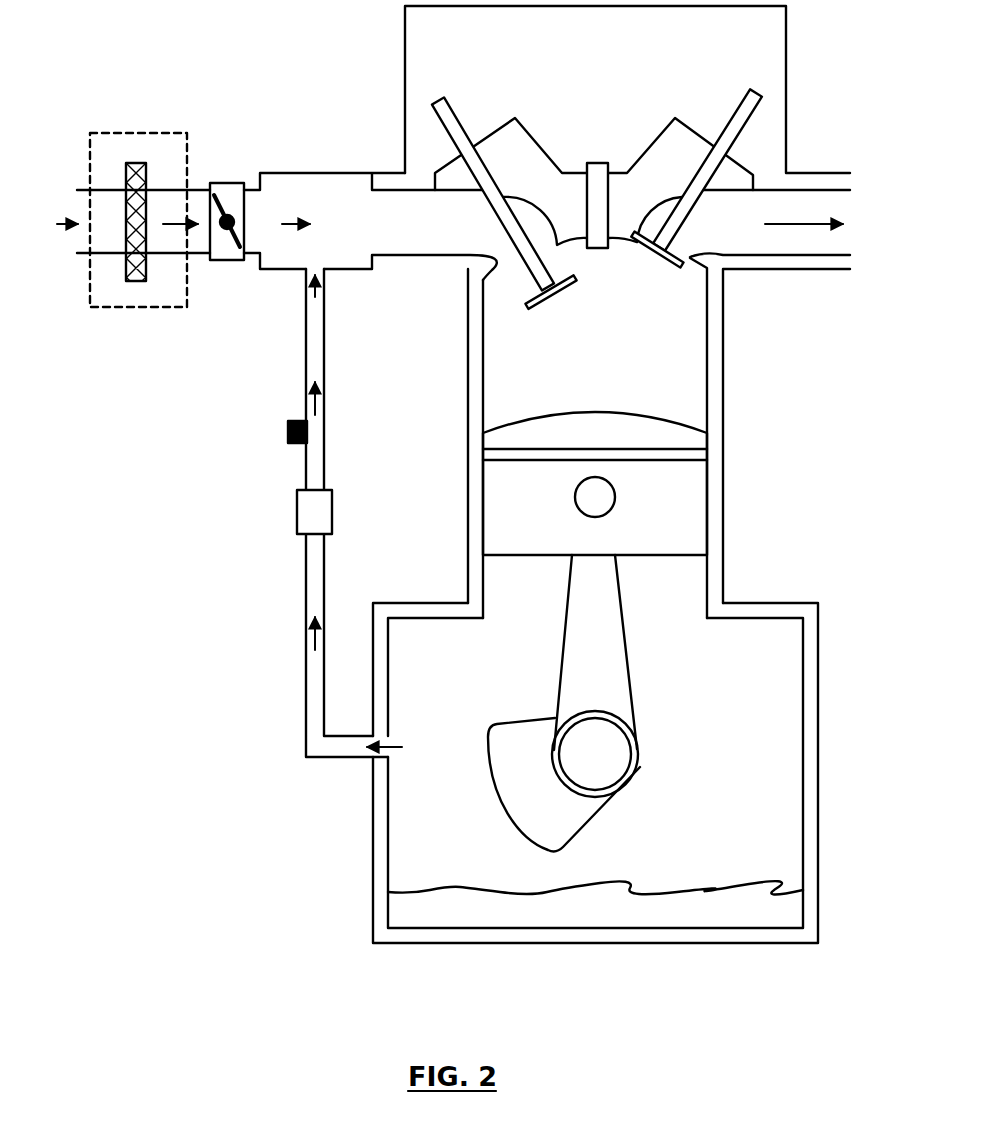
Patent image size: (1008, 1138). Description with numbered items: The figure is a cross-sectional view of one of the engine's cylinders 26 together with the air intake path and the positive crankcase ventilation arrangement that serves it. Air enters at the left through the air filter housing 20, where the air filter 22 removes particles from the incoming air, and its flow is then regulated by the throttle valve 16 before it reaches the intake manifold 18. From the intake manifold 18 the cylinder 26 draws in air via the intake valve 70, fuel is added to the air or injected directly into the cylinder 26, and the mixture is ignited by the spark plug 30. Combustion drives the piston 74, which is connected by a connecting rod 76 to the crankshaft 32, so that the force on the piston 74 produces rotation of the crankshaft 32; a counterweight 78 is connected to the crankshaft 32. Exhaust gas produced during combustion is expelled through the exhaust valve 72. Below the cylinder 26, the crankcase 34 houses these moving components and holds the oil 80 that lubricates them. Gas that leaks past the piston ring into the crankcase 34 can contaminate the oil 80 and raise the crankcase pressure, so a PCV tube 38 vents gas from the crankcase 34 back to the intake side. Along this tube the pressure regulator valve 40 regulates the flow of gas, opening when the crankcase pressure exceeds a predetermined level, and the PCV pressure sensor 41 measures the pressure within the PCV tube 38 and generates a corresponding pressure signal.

The throttle valve 16 is at (228, 260).
The intake manifold 18 is at (322, 173).
The air filter housing 20 is at (117, 133).
The air filter 22 is at (135, 282).
The cylinder 26 is at (766, 422).
The spark plug 30 is at (599, 163).
The crankshaft 32 is at (637, 768).
The crankcase 34 is at (803, 707).
The PCV tube 38 is at (306, 705).
The pressure regulator valve 40 is at (297, 511).
The PCV pressure sensor 41 is at (288, 433).
The intake valve 70 is at (553, 294).
The exhaust valve 72 is at (663, 259).
The piston 74 is at (650, 556).
The connecting rod 76 is at (560, 662).
The counterweight 78 is at (502, 809).
The oil 80 is at (678, 888).